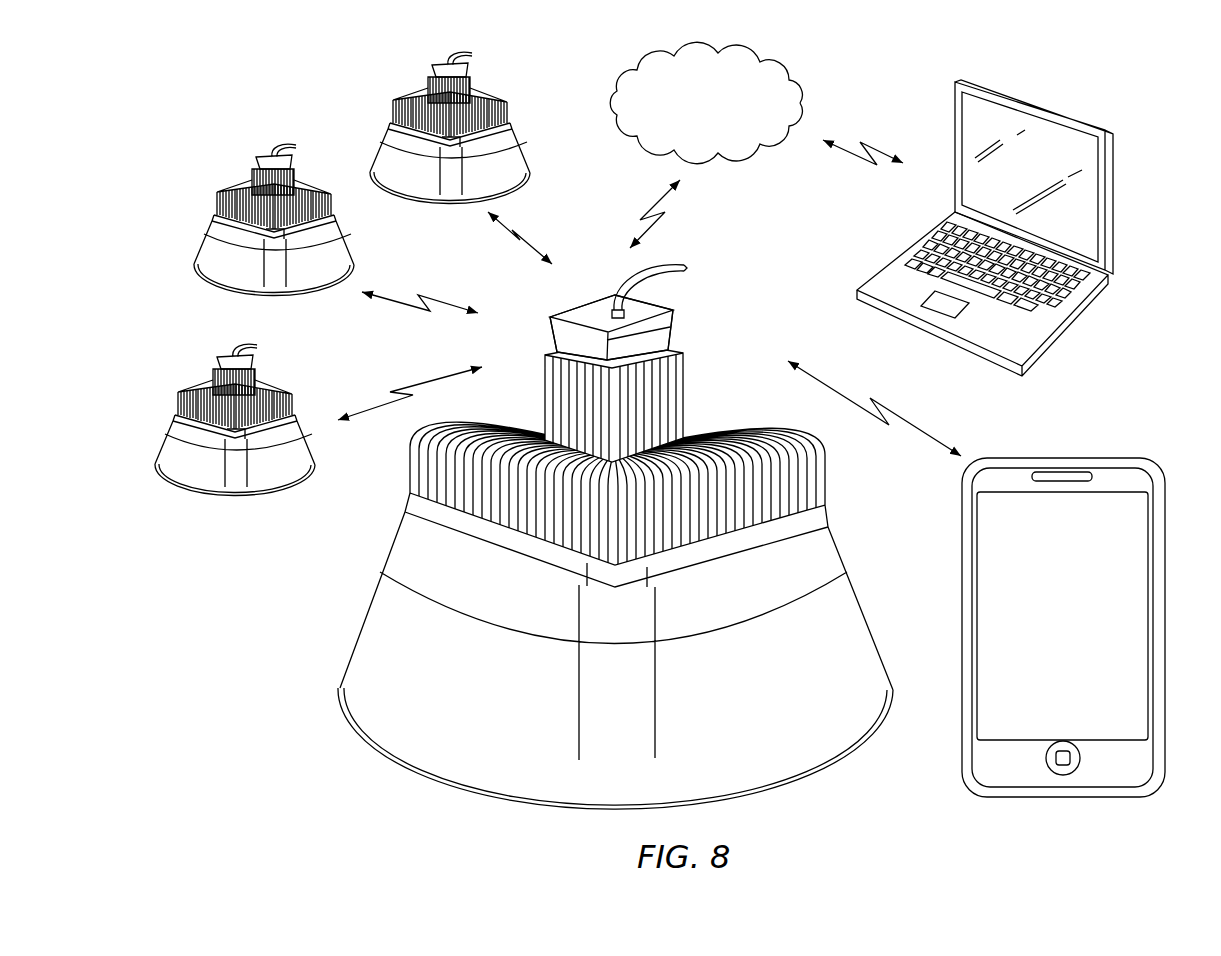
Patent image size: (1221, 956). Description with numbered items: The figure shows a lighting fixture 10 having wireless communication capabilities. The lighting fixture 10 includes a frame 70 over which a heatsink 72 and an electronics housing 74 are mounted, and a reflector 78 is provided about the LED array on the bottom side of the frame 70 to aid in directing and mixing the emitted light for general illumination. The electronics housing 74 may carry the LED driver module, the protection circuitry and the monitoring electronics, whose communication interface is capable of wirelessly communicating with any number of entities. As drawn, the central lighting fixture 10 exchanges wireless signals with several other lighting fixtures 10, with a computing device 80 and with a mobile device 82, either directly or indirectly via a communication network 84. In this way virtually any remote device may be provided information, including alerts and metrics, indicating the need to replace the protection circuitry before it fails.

The lighting fixture 10 is at (507, 135).
The frame 70 is at (823, 512).
The heatsink 72 is at (807, 463).
The electronics housing 74 is at (668, 323).
The reflector 78 is at (855, 607).
The computing device 80 is at (1003, 92).
The mobile device 82 is at (1051, 458).
The communication network 84 is at (715, 139).